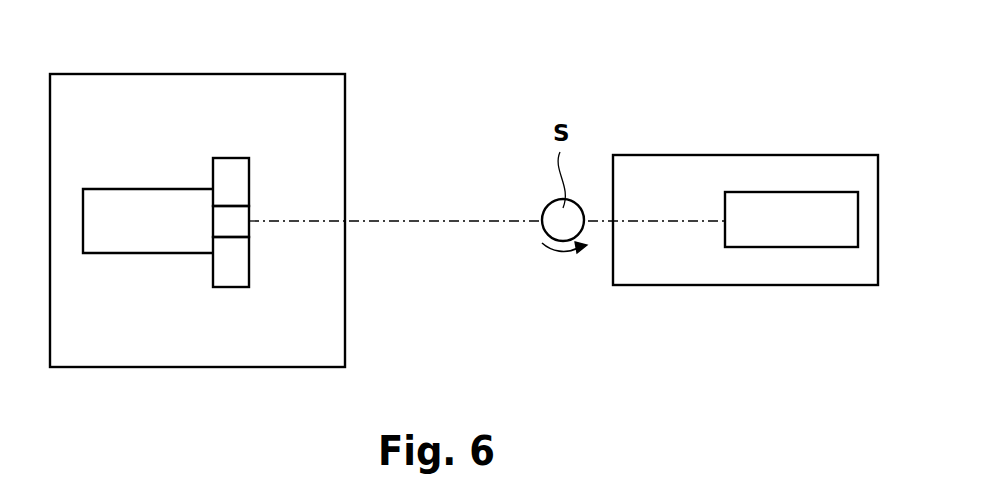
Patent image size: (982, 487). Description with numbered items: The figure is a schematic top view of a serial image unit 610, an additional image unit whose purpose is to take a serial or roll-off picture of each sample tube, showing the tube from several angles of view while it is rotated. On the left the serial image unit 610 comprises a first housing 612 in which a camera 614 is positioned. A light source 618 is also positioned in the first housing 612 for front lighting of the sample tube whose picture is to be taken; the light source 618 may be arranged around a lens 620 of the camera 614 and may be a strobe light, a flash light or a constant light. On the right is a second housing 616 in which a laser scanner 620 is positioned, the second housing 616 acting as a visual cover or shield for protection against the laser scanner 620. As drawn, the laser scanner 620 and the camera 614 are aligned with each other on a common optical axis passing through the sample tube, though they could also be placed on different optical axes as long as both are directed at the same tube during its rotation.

The serial image unit 610 is at (745, 144).
The first housing 612 is at (122, 103).
The camera 614 is at (137, 237).
The second housing 616 is at (668, 180).
The light source 618 is at (237, 175).
The laser scanner 620 is at (237, 212).